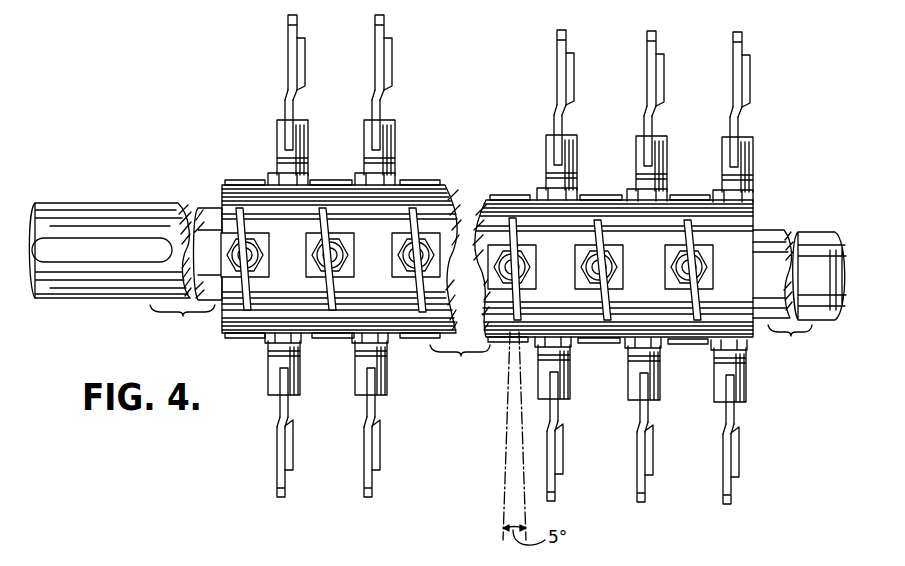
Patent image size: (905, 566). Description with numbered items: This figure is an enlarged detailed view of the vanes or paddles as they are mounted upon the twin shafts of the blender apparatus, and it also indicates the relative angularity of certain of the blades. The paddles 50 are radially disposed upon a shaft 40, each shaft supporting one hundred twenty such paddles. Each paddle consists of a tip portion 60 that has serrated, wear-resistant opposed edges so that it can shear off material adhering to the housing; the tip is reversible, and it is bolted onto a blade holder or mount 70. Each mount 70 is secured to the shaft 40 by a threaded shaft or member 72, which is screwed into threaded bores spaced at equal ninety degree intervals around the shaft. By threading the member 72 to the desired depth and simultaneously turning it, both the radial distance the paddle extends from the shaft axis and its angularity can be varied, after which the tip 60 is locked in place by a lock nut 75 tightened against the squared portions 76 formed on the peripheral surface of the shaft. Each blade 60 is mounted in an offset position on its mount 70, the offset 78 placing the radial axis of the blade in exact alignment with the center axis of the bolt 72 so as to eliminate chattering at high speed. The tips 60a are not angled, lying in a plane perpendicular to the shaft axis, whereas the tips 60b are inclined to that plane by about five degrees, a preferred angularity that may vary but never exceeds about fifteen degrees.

The shaft 40 is at (771, 229).
The paddle 50 is at (400, 72).
The tip portion 60 is at (744, 47).
The non-angled tip 60a is at (570, 68).
The inclined tip 60b is at (396, 286).
The blade holder 70 is at (290, 99).
The threaded member 72 is at (307, 157).
The lock nut 75 is at (394, 181).
The squared portion 76 is at (248, 245).
The offset 78 is at (567, 105).